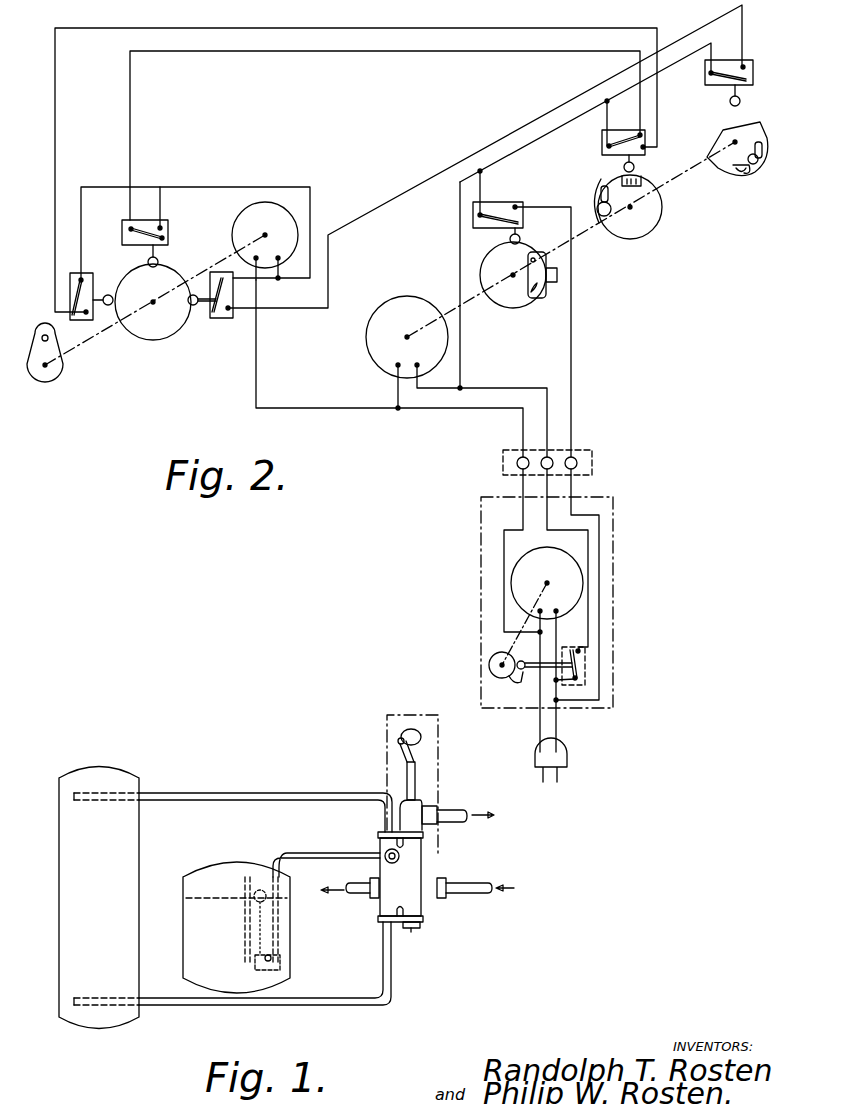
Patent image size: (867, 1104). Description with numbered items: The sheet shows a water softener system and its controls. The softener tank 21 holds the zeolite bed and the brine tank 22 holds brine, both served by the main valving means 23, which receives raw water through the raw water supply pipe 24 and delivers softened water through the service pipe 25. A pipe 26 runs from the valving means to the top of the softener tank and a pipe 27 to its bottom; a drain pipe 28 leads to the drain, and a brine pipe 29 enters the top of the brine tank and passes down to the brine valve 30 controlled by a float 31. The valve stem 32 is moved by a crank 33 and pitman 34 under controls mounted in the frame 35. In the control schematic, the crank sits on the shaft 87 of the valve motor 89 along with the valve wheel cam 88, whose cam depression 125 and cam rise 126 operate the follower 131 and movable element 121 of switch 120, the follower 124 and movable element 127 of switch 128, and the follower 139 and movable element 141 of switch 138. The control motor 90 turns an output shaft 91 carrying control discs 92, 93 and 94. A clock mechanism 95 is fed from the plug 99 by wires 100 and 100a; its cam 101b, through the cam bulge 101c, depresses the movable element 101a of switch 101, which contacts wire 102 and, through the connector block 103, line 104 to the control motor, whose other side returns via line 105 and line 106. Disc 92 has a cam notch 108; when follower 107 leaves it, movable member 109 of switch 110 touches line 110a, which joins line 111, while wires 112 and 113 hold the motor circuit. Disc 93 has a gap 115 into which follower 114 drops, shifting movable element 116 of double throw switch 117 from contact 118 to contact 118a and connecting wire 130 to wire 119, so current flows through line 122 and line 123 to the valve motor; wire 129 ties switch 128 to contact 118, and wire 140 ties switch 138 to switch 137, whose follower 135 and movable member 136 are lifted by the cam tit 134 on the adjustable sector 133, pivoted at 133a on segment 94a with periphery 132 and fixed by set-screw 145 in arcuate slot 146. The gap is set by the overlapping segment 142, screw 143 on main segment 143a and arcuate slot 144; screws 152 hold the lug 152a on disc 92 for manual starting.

In FIG. 1, the softener tank 21 is at (140, 848).
In FIG. 1, the brine tank 22 is at (220, 862).
In FIG. 1, the main valving means 23 is at (424, 905).
In FIG. 1, the raw water supply pipe 24 is at (471, 882).
In FIG. 1, the service pipe 25 is at (352, 881).
In FIG. 1, the pipe 26 is at (315, 792).
In FIG. 1, the pipe 27 is at (341, 1000).
In FIG. 1, the drain pipe 28 is at (456, 810).
In FIG. 1, the brine pipe 29 is at (317, 852).
In FIG. 1, the brine valve 30 is at (279, 956).
In FIG. 1, the float 31 is at (261, 890).
In FIG. 1, the valve stem 32 is at (416, 779).
In FIG. 2, the crank 33 is at (62, 365).
In FIG. 1, the crank 33 is at (411, 729).
In FIG. 1, the pitman 34 is at (398, 749).
In FIG. 1, the casing or frame 35 is at (440, 739).
In FIG. 2, the shaft 87 is at (99, 333).
In FIG. 2, the valve wheel cam 88 is at (152, 336).
In FIG. 2, the valve motor 89 is at (245, 202).
In FIG. 2, the control motor 90 is at (366, 336).
In FIG. 2, the output shaft 91 is at (473, 301).
In FIG. 2, the control disc 92 is at (512, 300).
In FIG. 2, the control disc 93 is at (655, 230).
In FIG. 2, the control disc 94 is at (716, 165).
In FIG. 2, the segment 94a is at (729, 139).
In FIG. 2, the clock mechanism 95 is at (578, 562).
In FIG. 2, the plug 99 is at (568, 764).
In FIG. 2, the wire 100 is at (540, 732).
In FIG. 2, the wire 100a is at (558, 741).
In FIG. 2, the switch 101 is at (588, 656).
In FIG. 2, the movable element 101a is at (587, 672).
In FIG. 2, the cam 101b is at (494, 658).
In FIG. 2, the cam bulge 101c is at (536, 685).
In FIG. 2, the wire 102 is at (590, 599).
In FIG. 2, the multiple connector block 103 is at (596, 450).
In FIG. 2, the line 104 is at (437, 391).
In FIG. 2, the line 105 is at (471, 411).
In FIG. 2, the line 106 is at (504, 556).
In FIG. 2, the follower 107 is at (521, 238).
In FIG. 2, the cam notch 108 is at (503, 251).
In FIG. 2, the movable current carrying member 109 is at (491, 213).
In FIG. 2, the switch 110 is at (521, 204).
In FIG. 2, the line 110a is at (571, 356).
In FIG. 2, the line 111 is at (601, 568).
In FIG. 2, the wire 112 is at (458, 194).
In FIG. 2, the wire 113 is at (460, 228).
In FIG. 2, the follower 114 is at (635, 166).
In FIG. 2, the gap 115 is at (612, 180).
In FIG. 2, the movable element 116 is at (623, 142).
In FIG. 2, the double throw switch 117 is at (605, 150).
In FIG. 2, the contact 118 is at (646, 130).
In FIG. 2, the contact 118a is at (647, 145).
In FIG. 2, the wire 119 is at (608, 28).
In FIG. 2, the switch 120 is at (70, 276).
In FIG. 2, the movable current carrying element 121 is at (76, 292).
In FIG. 2, the line 122 is at (311, 190).
In FIG. 2, the line 123 is at (313, 407).
In FIG. 2, the follower 124 is at (158, 260).
In FIG. 2, the cam depression 125 is at (178, 276).
In FIG. 2, the cam rise 126 is at (126, 272).
In FIG. 2, the movable element 127 is at (141, 229).
In FIG. 2, the switch 128 is at (168, 228).
In FIG. 2, the wire 129 is at (130, 134).
In FIG. 2, the wire 130 is at (540, 137).
In FIG. 2, the follower 131 is at (108, 294).
In FIG. 2, the periphery 132 is at (761, 125).
In FIG. 2, the adjustable sector 133 is at (768, 149).
In FIG. 2, the pivot 133a is at (740, 132).
In FIG. 2, the cam tit 134 is at (760, 161).
In FIG. 2, the follower 135 is at (741, 97).
In FIG. 2, the movable member 136 is at (729, 70).
In FIG. 2, the switch 137 is at (745, 60).
In FIG. 2, the switch 138 is at (233, 319).
In FIG. 2, the follower 139 is at (191, 311).
In FIG. 2, the wire 140 is at (399, 196).
In FIG. 2, the movable element 141 is at (221, 318).
In FIG. 2, the overlapping segment 142 is at (260, 275).
In FIG. 2, the screw 143 is at (606, 229).
In FIG. 2, the main segment 143a is at (642, 183).
In FIG. 2, the arcuate slot 144 is at (628, 230).
In FIG. 2, the set-screw 145 is at (752, 173).
In FIG. 2, the arcuate slot 146 is at (740, 173).
In FIG. 2, the screws 152 is at (541, 300).
In FIG. 2, the lug 152a is at (560, 282).